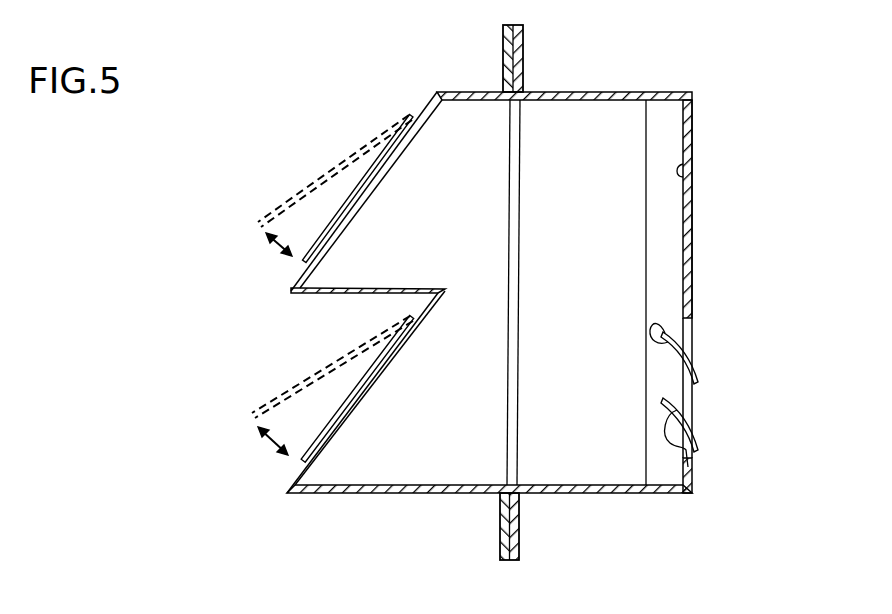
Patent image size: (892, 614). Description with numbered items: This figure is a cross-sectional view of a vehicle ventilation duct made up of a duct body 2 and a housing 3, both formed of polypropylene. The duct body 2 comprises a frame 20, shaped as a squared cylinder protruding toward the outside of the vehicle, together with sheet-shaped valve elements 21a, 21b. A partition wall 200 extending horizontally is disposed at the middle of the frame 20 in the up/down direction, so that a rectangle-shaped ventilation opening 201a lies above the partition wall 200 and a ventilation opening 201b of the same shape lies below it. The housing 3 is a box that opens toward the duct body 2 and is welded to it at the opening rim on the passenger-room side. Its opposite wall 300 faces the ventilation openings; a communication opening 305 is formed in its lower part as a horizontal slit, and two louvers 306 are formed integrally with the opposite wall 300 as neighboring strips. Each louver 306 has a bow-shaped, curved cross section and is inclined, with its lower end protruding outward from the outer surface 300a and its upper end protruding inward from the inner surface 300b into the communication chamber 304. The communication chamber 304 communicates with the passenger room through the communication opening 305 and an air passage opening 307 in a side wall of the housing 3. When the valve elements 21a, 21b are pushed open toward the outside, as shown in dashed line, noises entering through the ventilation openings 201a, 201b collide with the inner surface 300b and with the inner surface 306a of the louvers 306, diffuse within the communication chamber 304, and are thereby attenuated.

The duct body 2 is at (386, 500).
The housing 3 is at (543, 500).
The frame 20 is at (457, 93).
The sheet-shaped valve element 21a is at (355, 186).
The sheet-shaped valve element 21b is at (345, 405).
The partition wall 200 is at (355, 291).
The ventilation opening 201a is at (393, 166).
The ventilation opening 201b is at (365, 397).
The opposite wall 300 is at (692, 108).
The outer surface 300a is at (690, 150).
The inner surface 300b is at (683, 173).
The communication chamber 304 is at (623, 237).
The communication opening 305 is at (690, 398).
The louver 306 is at (690, 338).
The inner surface of louver 306a is at (680, 322).
The air passage opening 307 is at (558, 122).